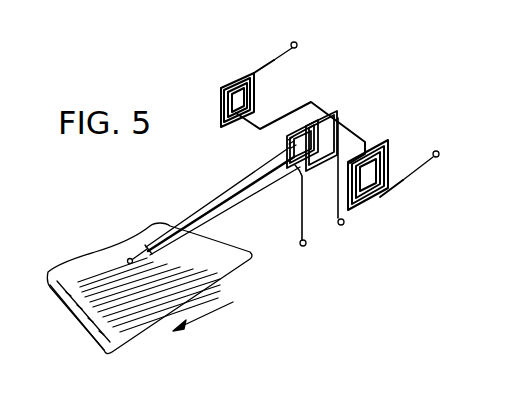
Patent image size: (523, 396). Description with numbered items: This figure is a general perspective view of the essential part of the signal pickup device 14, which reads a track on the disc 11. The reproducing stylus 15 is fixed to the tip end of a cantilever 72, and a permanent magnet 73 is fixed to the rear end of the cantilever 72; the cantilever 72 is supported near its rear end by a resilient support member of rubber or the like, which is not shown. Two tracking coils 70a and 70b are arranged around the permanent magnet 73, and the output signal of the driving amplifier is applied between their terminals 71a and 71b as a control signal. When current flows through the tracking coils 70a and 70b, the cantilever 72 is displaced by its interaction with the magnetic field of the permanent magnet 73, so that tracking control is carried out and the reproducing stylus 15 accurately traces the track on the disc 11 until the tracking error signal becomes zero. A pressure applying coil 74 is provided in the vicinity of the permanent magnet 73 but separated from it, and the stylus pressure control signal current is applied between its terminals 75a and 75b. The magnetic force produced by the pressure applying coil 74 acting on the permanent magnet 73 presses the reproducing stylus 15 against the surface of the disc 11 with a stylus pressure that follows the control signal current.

The disc 11 is at (62, 291).
The signal pickup device 14 is at (360, 82).
The reproducing stylus 15 is at (127, 257).
The tracking coil 70a is at (224, 84).
The tracking coil 70b is at (378, 190).
The terminal 71a is at (297, 41).
The terminal 71b is at (437, 151).
The cantilever 72 is at (254, 197).
The permanent magnet 73 is at (288, 150).
The pressure applying coil 74 is at (301, 200).
The terminal 75a is at (344, 222).
The terminal 75b is at (300, 243).